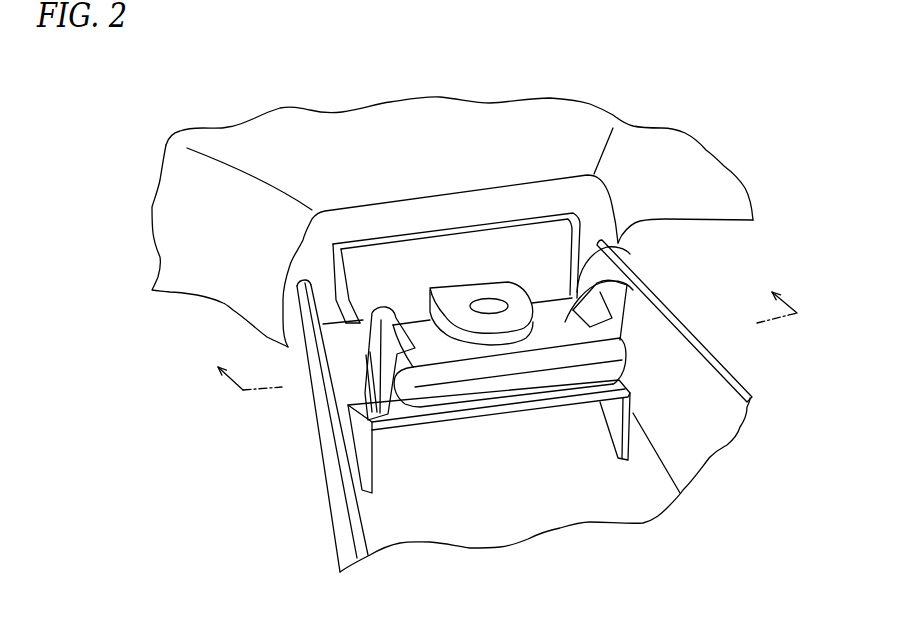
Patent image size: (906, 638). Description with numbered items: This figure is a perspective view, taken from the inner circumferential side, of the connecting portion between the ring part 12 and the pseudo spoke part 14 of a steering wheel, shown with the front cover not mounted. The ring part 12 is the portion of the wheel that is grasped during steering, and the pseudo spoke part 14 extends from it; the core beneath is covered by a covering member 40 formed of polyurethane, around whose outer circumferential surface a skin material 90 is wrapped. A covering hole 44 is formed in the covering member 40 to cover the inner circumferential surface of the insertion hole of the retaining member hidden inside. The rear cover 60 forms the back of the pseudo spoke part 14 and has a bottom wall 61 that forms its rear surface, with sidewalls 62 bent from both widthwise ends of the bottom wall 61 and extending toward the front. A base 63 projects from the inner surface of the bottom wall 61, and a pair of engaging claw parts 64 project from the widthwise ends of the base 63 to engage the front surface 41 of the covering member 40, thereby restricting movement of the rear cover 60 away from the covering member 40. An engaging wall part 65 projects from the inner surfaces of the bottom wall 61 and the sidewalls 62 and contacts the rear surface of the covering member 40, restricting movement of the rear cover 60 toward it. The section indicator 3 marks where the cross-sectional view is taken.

The skin material 90 is at (452, 202).
The ring part 12 is at (702, 225).
The pseudo spoke part 14 is at (307, 433).
The covering member 40 is at (536, 350).
The front surface 41 is at (620, 267).
The covering hole 44 is at (488, 303).
The rear cover 60 is at (517, 412).
The bottom wall 61 is at (542, 527).
The sidewalls 62 is at (504, 406).
The base 63 is at (453, 420).
The engaging claw parts 64 is at (612, 312).
The engaging wall part 65 is at (350, 338).
The section line 3 is at (502, 329).